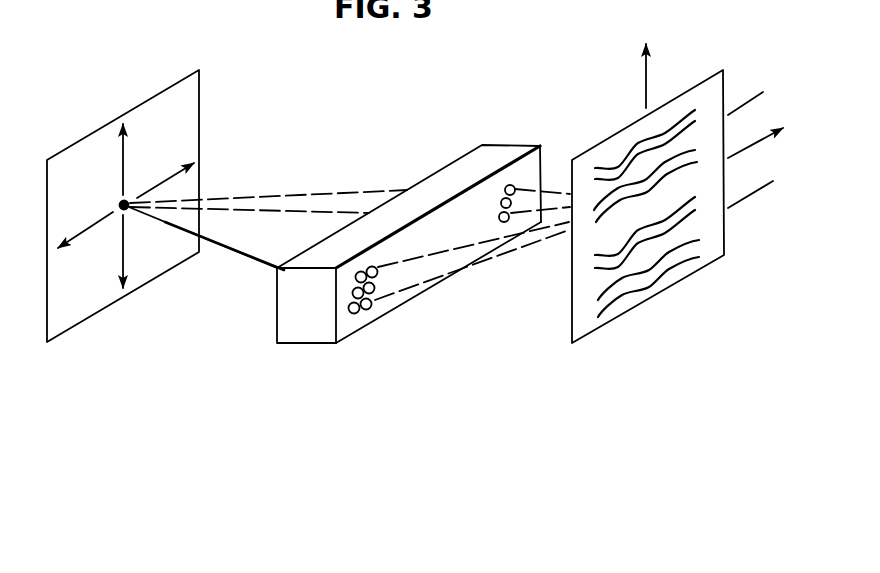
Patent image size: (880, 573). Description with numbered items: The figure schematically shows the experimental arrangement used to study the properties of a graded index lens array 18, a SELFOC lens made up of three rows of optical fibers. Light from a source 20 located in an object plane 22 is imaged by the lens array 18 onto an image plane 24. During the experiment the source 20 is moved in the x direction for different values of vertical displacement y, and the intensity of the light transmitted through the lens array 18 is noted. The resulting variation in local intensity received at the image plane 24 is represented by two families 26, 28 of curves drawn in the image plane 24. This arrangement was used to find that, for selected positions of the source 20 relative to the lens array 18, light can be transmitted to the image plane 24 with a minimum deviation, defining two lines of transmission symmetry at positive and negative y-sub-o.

The graded index lens array 18 is at (283, 349).
The source 20 is at (120, 212).
The object plane 22 is at (85, 312).
The image plane 24 is at (590, 328).
The family of curves 26 is at (634, 146).
The family of curves 28 is at (627, 280).